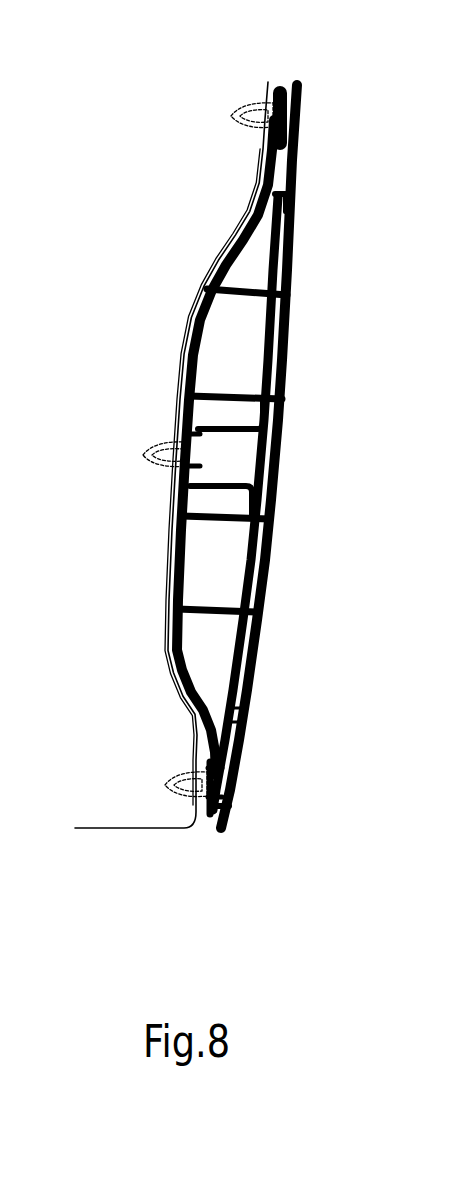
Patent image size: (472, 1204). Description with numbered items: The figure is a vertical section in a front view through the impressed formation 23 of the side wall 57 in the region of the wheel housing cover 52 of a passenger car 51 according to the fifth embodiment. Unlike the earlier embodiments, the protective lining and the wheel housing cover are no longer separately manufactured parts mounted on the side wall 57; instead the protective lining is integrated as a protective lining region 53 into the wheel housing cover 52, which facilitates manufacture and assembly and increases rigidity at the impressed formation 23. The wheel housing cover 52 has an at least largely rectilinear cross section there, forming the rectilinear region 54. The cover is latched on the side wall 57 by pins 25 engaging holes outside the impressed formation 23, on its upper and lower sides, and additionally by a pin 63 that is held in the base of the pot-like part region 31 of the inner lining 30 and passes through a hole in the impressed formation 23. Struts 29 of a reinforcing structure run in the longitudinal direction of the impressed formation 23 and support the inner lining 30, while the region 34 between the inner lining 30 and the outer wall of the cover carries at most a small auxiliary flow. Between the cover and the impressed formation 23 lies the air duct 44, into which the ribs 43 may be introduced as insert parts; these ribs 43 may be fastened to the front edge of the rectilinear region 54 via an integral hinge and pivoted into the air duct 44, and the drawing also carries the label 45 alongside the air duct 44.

The passenger car 51 is at (150, 170).
The wheel housing cover 52 is at (290, 255).
The protective lining region 53 is at (198, 291).
The rectilinear region 54 is at (182, 322).
The side wall 57 is at (268, 88).
The impressed formation 23 is at (184, 477).
The pin 25 is at (232, 108).
The pin 63 is at (160, 464).
The strut 29 is at (278, 393).
The pot-like part region 31 is at (220, 478).
The inner lining 30 is at (220, 637).
The region 34 is at (233, 697).
The rib 43 is at (210, 605).
The air duct 44 is at (227, 557).
The web 45 is at (234, 513).